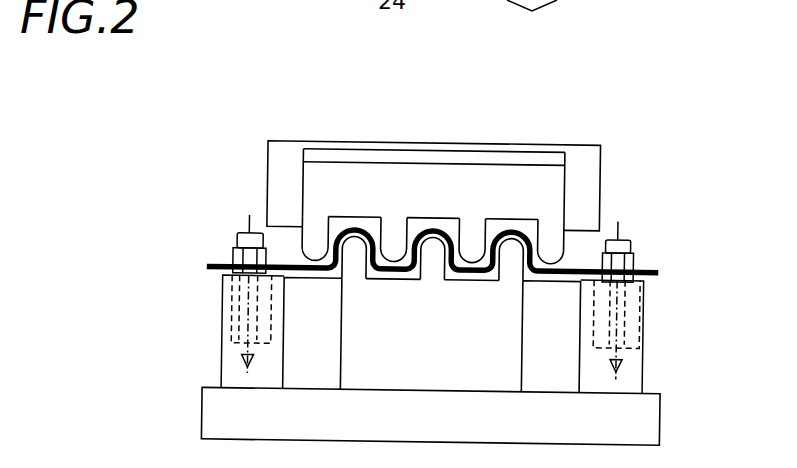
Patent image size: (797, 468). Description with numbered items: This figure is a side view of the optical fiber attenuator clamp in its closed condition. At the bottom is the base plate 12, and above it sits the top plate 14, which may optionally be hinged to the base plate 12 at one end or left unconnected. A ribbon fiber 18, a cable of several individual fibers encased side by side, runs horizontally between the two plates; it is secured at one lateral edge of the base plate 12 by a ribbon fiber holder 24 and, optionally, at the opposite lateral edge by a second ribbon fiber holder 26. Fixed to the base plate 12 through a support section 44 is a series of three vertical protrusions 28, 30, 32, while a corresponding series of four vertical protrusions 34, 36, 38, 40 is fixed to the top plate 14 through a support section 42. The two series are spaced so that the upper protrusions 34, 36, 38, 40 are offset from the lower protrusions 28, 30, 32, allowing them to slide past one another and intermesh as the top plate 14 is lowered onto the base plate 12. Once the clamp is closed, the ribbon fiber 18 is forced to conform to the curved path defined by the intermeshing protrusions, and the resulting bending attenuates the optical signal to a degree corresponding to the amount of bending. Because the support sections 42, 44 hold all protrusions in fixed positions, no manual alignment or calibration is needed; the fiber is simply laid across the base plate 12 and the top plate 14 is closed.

The base plate 12 is at (446, 432).
The top plate 14 is at (283, 175).
The ribbon fiber 18 is at (203, 275).
The ribbon fiber holder 24 is at (230, 253).
The second ribbon fiber holder 26 is at (634, 262).
The vertical protrusion 28 is at (356, 263).
The vertical protrusion 30 is at (434, 263).
The vertical protrusion 32 is at (509, 263).
The vertical protrusion 34 is at (316, 240).
The vertical protrusion 36 is at (396, 240).
The vertical protrusion 38 is at (472, 243).
The vertical protrusion 40 is at (548, 243).
The support section 42 is at (447, 208).
The support section 44 is at (446, 377).